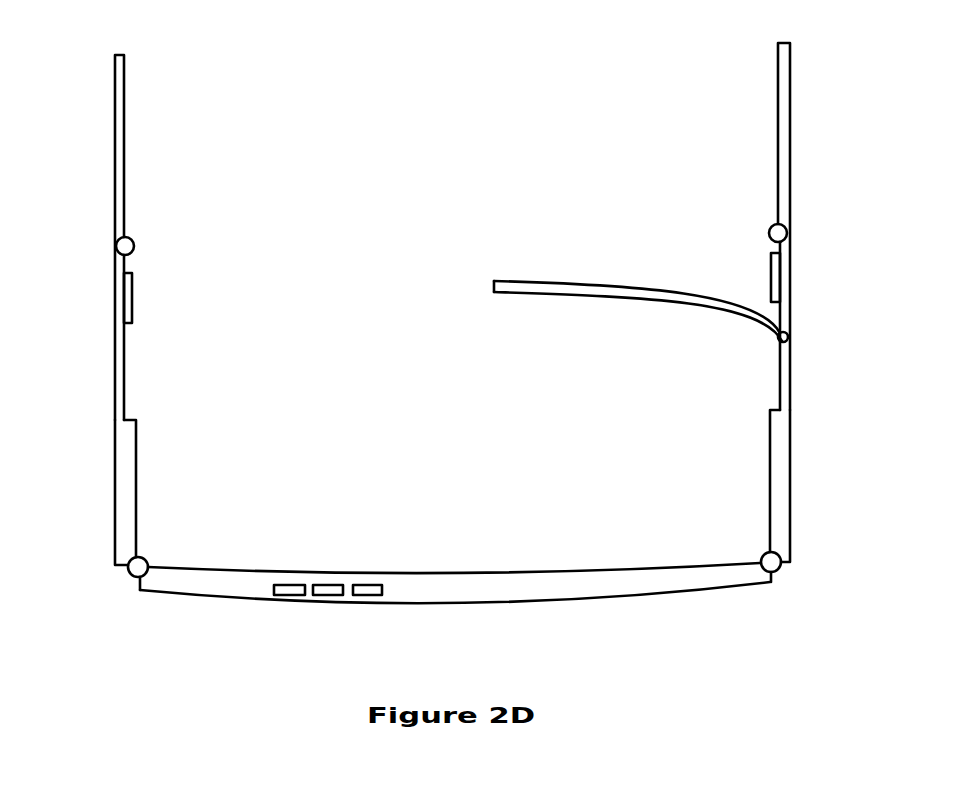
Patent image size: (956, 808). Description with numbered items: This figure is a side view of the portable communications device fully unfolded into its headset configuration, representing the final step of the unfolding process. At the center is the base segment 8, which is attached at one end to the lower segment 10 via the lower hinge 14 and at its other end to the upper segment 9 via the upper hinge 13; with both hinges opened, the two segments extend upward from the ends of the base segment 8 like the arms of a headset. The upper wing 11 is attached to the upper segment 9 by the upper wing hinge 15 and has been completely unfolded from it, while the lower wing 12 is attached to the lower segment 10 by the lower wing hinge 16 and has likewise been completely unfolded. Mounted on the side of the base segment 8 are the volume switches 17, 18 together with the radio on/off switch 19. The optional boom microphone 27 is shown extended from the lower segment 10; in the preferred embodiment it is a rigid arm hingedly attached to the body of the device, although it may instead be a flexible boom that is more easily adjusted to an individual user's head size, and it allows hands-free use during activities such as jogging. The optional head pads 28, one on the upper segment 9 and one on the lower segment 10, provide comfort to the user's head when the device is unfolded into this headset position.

The base segment 8 is at (668, 580).
The upper segment 9 is at (122, 477).
The lower segment 10 is at (783, 484).
The upper wing 11 is at (122, 167).
The lower wing 12 is at (780, 172).
The upper hinge 13 is at (130, 573).
The lower hinge 14 is at (780, 570).
The upper wing hinge 15 is at (134, 247).
The lower wing hinge 16 is at (787, 230).
The volume switch 17 is at (282, 585).
The volume switch 18 is at (329, 585).
The radio on/off switch 19 is at (367, 585).
The boom microphone 27 is at (637, 297).
The head pads 28 is at (126, 303).